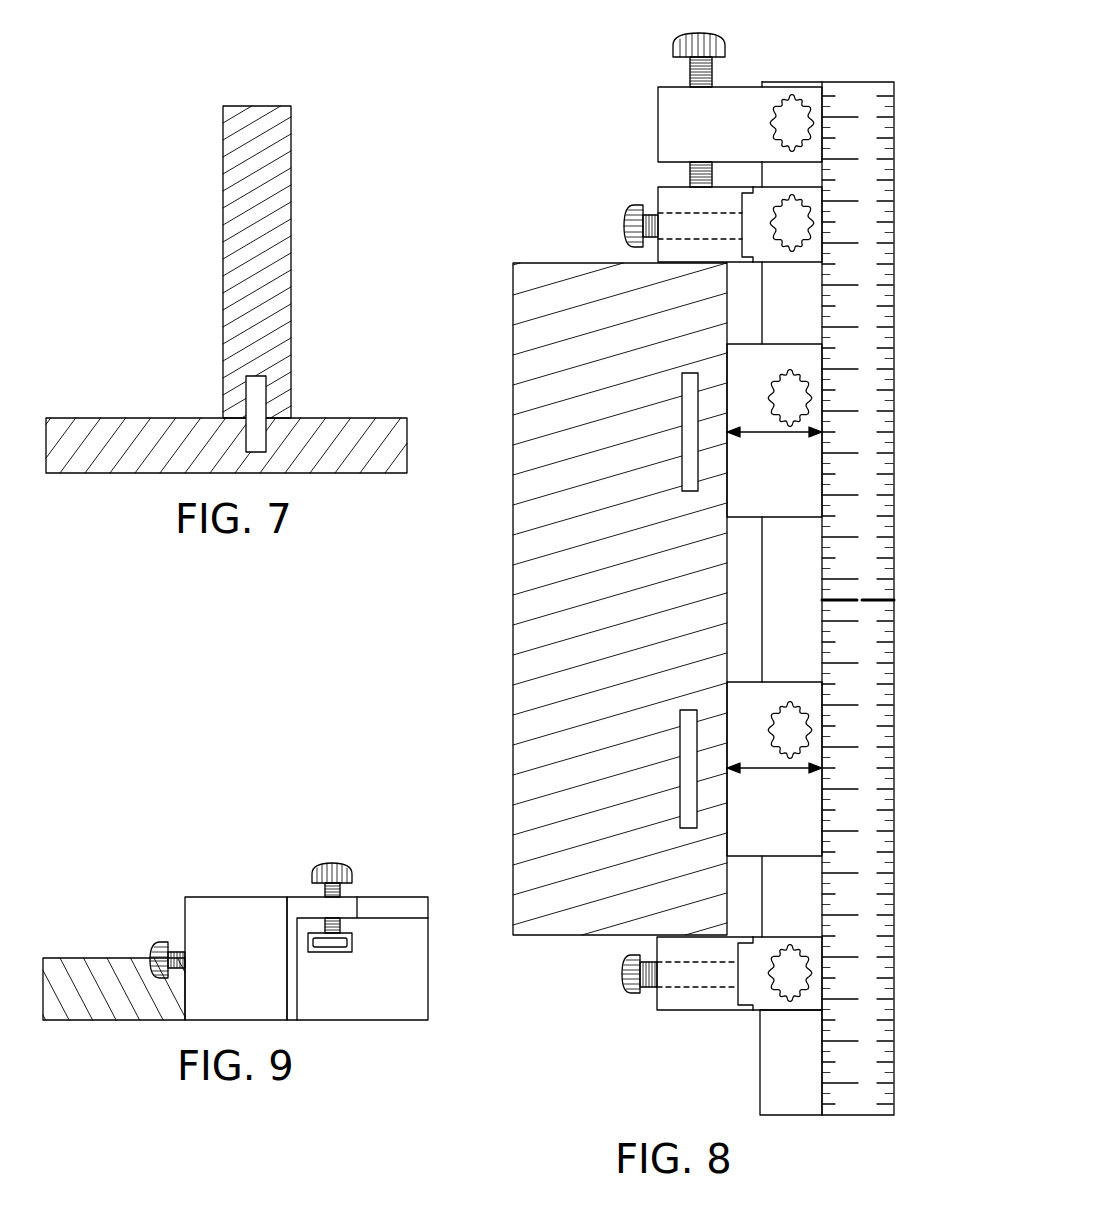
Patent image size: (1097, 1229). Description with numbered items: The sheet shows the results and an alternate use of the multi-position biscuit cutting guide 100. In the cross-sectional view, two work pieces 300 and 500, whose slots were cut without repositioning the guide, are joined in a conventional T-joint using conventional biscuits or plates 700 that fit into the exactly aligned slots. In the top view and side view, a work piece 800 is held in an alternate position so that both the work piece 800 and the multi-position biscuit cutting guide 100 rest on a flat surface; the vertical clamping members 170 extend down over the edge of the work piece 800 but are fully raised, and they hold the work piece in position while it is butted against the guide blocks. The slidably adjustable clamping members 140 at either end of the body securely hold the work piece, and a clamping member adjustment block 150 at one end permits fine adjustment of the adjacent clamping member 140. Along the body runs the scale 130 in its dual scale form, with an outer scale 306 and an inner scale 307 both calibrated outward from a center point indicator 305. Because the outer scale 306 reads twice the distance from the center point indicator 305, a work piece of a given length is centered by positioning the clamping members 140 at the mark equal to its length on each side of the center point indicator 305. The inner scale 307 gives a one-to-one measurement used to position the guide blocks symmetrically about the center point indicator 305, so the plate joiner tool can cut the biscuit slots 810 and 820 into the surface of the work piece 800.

In FIG. 8, the multi-position biscuit cutting guide 100 is at (600, 243).
In FIG. 8, the scale 130 is at (820, 1060).
In FIG. 8, the clamping member 140 is at (775, 186).
In FIG. 9, the clamping member 140 is at (305, 897).
In FIG. 8, the clamping member adjustment block 150 is at (657, 110).
In FIG. 8, the vertical clamping member 170 is at (657, 206).
In FIG. 9, the vertical clamping member 170 is at (185, 912).
In FIG. 7, the work piece 300 is at (163, 417).
In FIG. 8, the center point indicator 305 is at (802, 601).
In FIG. 8, the outer scale 306 is at (888, 76).
In FIG. 8, the inner scale 307 is at (835, 76).
In FIG. 7, the work piece 500 is at (224, 150).
In FIG. 7, the biscuit 700 is at (258, 375).
In FIG. 8, the work piece 800 is at (511, 766).
In FIG. 9, the work piece 800 is at (96, 957).
In FIG. 8, the biscuit slot 810 is at (680, 768).
In FIG. 8, the biscuit slot 820 is at (680, 420).